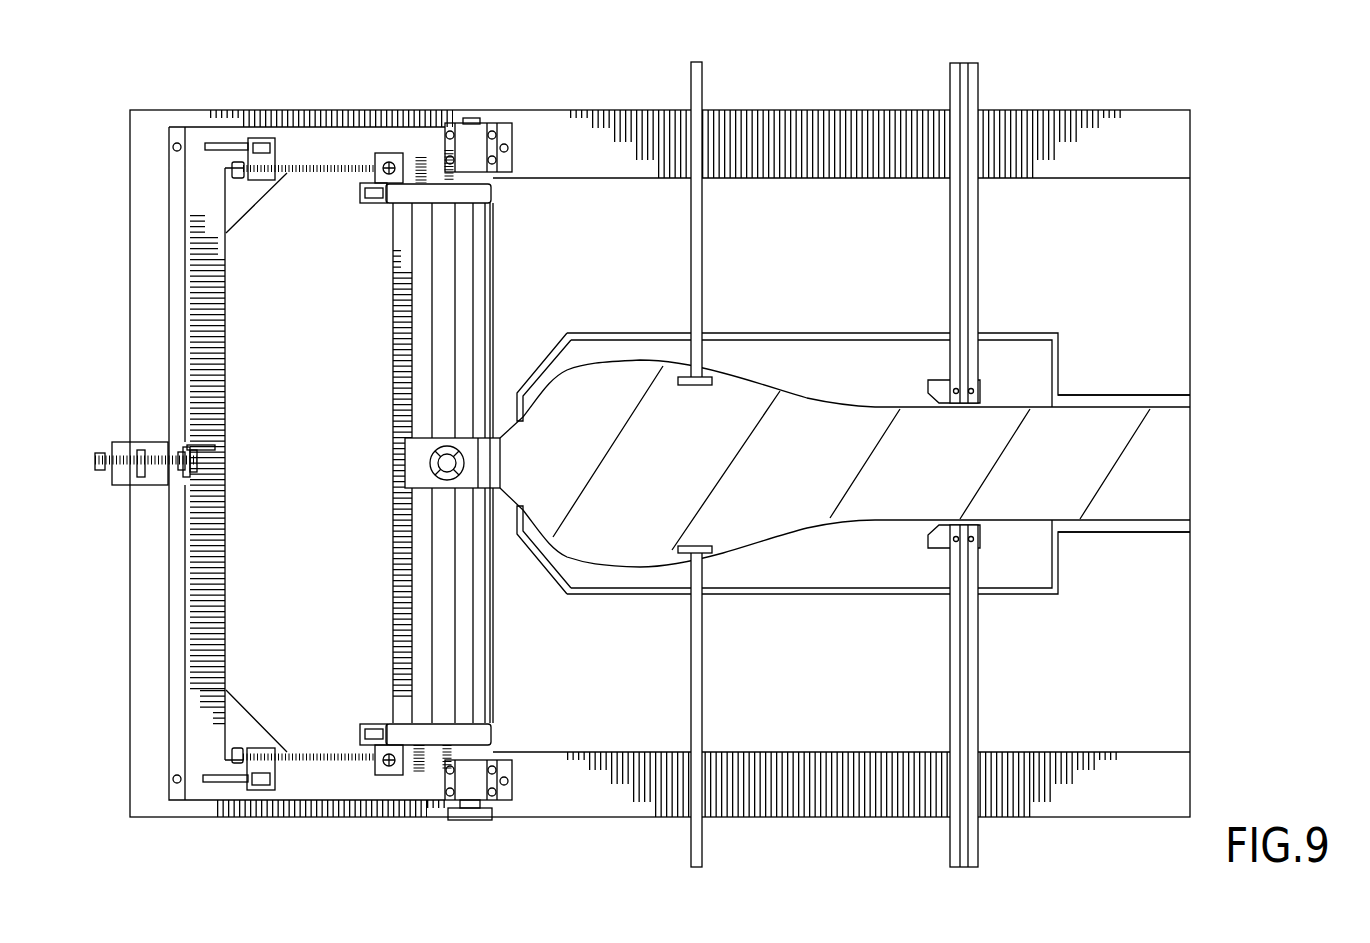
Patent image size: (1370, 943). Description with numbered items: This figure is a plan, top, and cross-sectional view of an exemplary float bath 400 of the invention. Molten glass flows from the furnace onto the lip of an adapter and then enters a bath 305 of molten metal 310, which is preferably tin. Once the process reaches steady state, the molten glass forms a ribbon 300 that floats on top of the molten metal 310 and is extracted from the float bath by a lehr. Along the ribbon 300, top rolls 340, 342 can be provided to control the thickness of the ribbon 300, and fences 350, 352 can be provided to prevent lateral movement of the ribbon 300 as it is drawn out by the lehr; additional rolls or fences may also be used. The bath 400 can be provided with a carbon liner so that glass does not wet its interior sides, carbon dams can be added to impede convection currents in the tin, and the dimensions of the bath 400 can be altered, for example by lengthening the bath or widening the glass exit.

The bath 400 is at (326, 66).
The ribbon 300 is at (680, 477).
The bath of molten metal 305 is at (800, 562).
The molten metal 310 is at (885, 568).
The top roll 340 is at (710, 379).
The top roll 342 is at (680, 551).
The fence 350 is at (981, 389).
The fence 352 is at (981, 542).